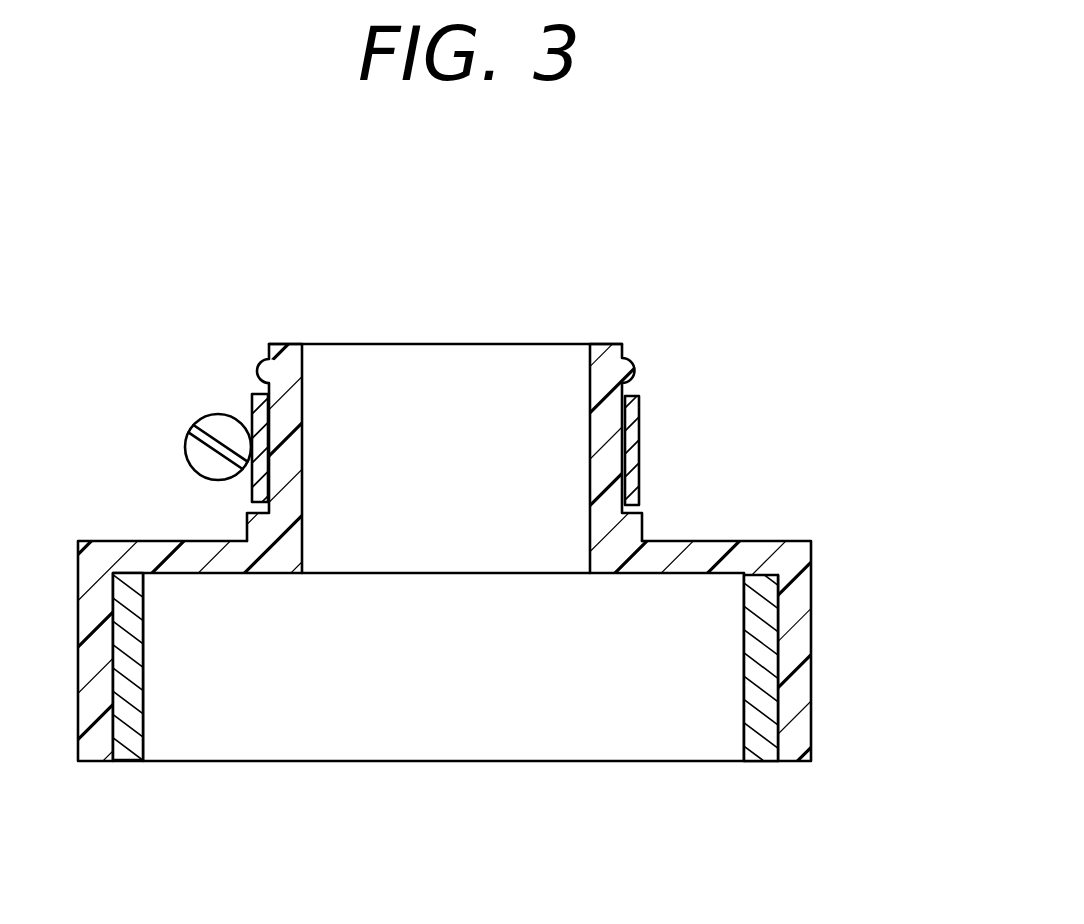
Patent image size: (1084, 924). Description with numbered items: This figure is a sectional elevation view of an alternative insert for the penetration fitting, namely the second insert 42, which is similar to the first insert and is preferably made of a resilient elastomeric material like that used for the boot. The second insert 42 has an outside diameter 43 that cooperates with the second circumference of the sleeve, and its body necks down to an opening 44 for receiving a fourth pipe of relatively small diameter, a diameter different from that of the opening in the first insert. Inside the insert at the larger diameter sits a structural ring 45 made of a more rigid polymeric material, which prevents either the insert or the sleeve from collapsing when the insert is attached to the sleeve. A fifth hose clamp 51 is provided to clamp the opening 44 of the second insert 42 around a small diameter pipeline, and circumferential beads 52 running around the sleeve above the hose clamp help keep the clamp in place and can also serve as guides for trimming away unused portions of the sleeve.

The second insert 42 is at (542, 462).
The outside diameter 43 is at (812, 647).
The opening 44 is at (590, 397).
The structural ring 45 is at (763, 761).
The fifth hose clamp 51 is at (250, 405).
The circumferential beads 52 is at (637, 367).